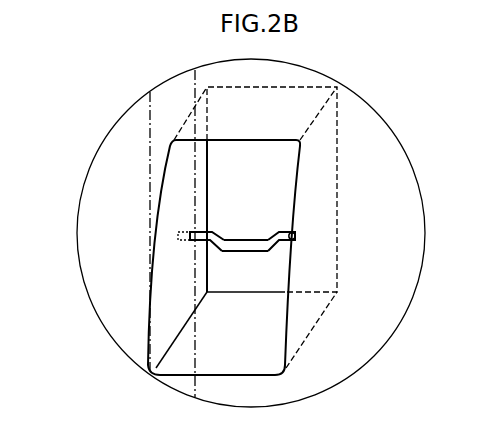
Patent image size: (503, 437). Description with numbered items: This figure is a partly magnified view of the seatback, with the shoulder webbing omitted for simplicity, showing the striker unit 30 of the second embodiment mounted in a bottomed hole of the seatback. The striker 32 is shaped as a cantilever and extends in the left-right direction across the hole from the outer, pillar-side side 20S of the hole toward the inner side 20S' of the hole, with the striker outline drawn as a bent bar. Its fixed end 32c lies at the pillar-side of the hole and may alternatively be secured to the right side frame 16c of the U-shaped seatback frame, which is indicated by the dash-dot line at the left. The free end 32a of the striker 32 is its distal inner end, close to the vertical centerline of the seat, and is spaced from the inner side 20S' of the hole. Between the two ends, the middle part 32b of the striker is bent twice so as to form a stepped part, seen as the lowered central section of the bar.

The right side frame 16c is at (170, 92).
The outer side of the hole 20S is at (171, 236).
The inner side of the hole 20S' is at (317, 227).
The striker unit 30 is at (218, 277).
The striker 32 is at (296, 277).
The free end of the striker 32a is at (300, 237).
The middle part of the striker 32b is at (238, 252).
The fixed end of the striker 32c is at (178, 237).